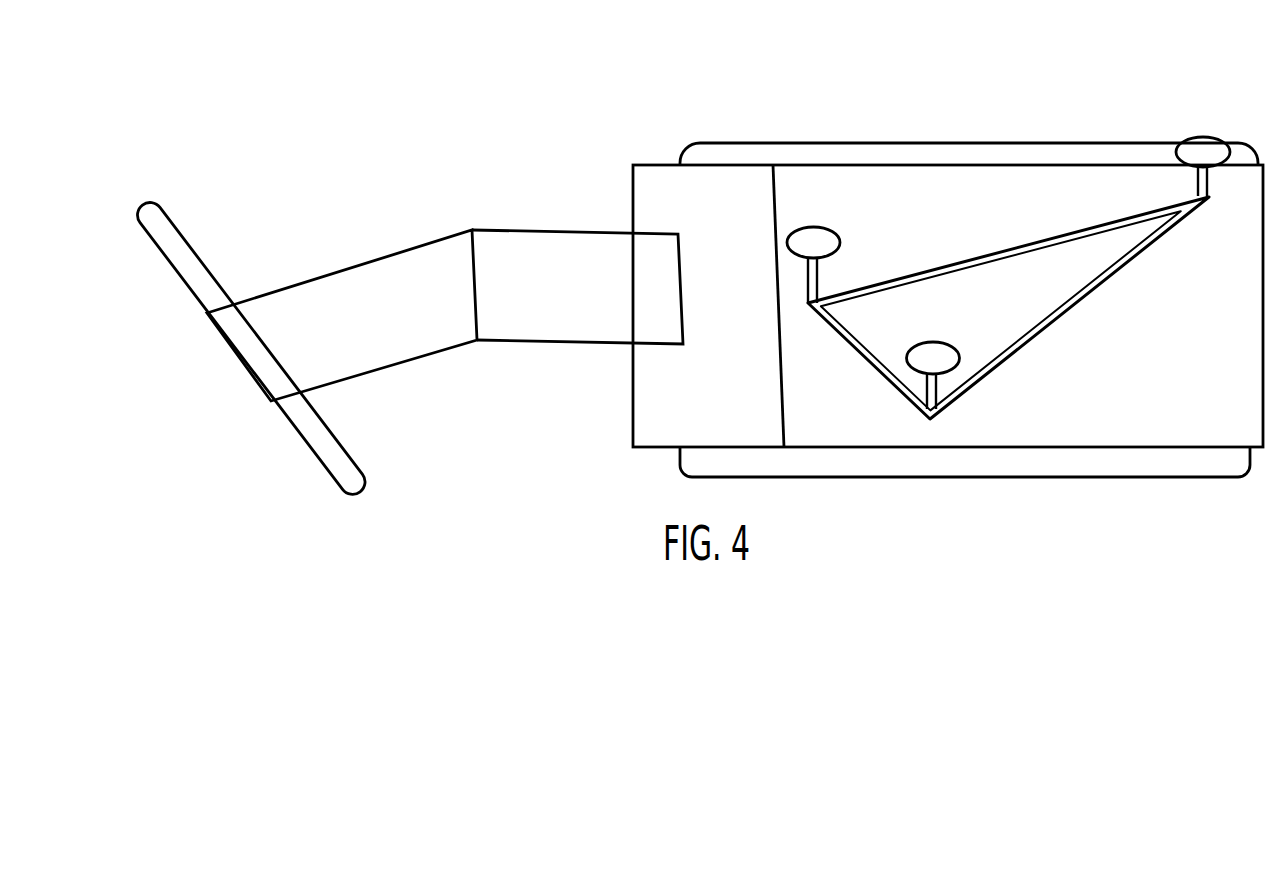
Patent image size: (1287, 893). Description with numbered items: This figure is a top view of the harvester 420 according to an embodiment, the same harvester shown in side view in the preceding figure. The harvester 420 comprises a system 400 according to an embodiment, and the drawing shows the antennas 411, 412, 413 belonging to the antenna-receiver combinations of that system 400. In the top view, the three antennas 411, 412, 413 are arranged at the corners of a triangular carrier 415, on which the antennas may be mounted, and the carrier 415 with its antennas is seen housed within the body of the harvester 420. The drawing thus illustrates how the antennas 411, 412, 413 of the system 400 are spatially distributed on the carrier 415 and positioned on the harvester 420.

The system 400 is at (1008, 237).
The antenna 411 is at (841, 243).
The antenna 412 is at (960, 354).
The antenna 413 is at (1203, 137).
The carrier 415 is at (1083, 312).
The harvester 420 is at (633, 183).